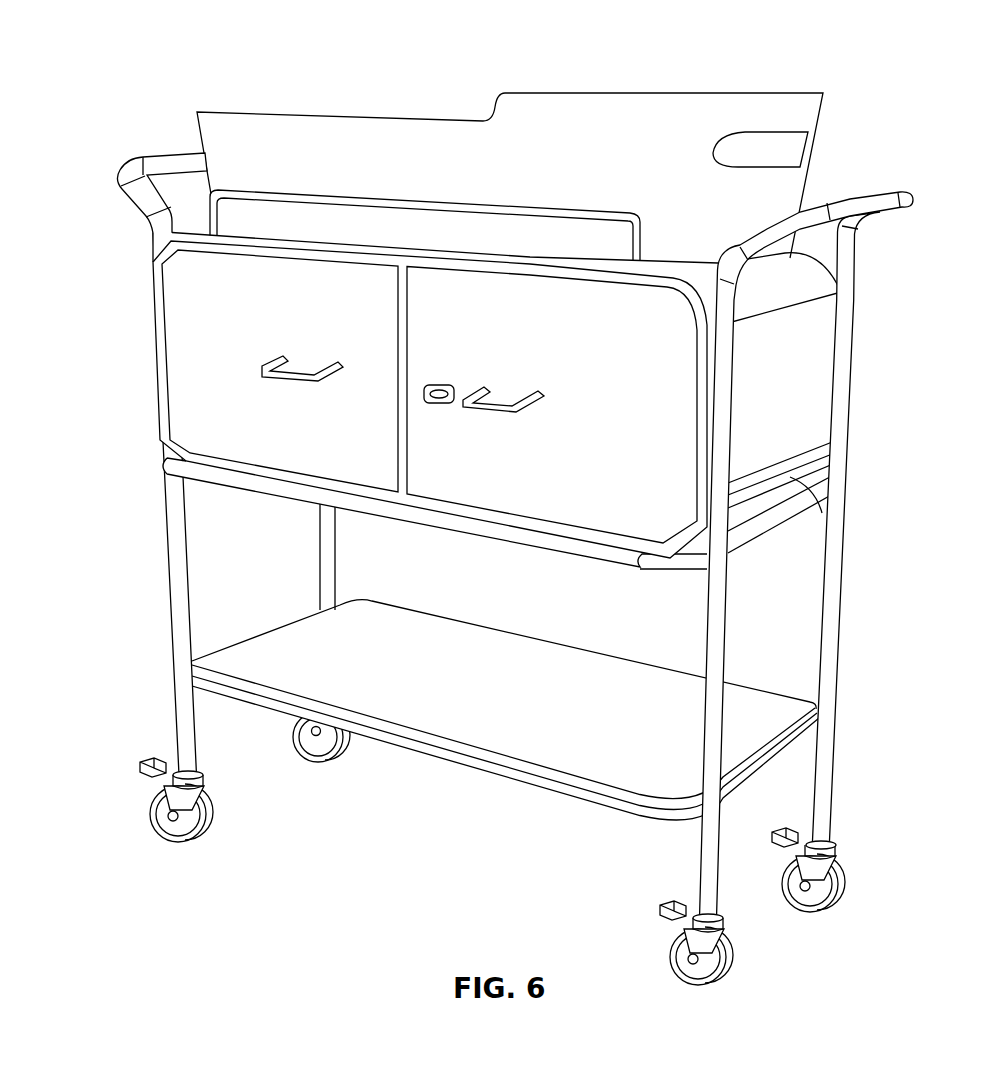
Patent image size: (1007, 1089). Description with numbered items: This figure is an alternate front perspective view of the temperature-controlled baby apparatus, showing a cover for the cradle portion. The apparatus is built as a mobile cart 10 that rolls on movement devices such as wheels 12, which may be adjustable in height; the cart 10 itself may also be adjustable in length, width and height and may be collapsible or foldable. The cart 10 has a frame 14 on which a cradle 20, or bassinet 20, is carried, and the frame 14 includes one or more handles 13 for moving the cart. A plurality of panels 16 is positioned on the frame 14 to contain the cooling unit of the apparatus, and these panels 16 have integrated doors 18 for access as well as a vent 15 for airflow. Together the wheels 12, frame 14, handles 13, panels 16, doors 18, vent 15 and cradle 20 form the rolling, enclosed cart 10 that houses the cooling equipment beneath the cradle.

The cart 10 is at (505, 511).
The wheels 12 is at (132, 839).
The handle 13 is at (111, 209).
The frame 14 is at (852, 745).
The vent 15 is at (822, 352).
The panels 16 is at (764, 494).
The doors 18 is at (318, 460).
The cradle 20 is at (836, 93).